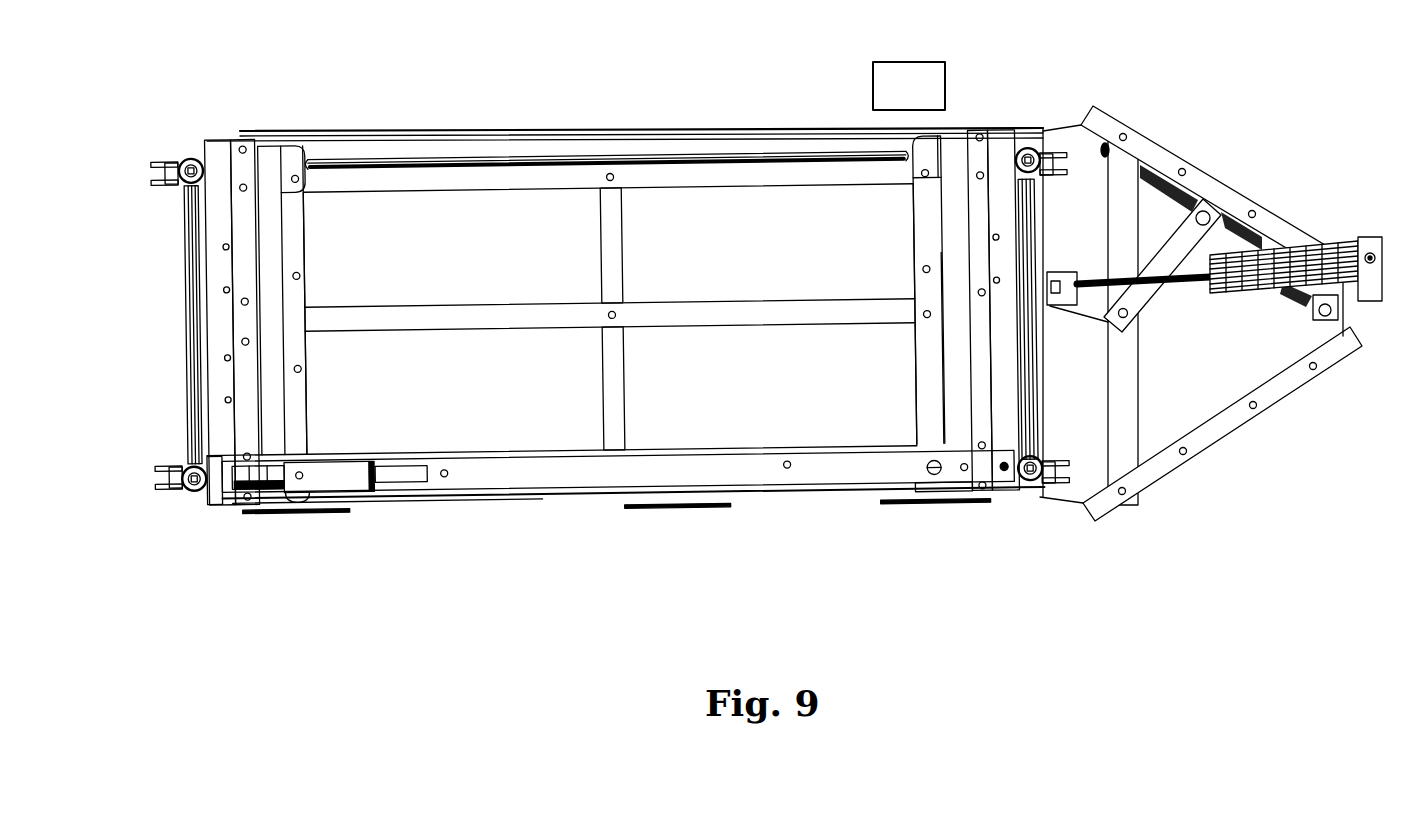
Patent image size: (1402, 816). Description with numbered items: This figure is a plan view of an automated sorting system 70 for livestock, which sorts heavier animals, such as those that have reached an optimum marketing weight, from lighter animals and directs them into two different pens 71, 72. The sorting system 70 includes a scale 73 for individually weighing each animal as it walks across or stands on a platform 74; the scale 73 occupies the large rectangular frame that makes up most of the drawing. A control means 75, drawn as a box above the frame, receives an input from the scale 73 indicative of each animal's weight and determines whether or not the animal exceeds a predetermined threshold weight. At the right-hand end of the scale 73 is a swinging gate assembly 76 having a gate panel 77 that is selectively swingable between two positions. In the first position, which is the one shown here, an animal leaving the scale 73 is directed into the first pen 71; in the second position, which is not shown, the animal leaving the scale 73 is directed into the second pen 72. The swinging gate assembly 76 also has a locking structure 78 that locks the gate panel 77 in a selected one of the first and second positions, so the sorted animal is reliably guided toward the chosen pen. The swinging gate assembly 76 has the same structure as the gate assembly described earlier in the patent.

The automated sorting system 70 is at (346, 559).
The first pen 71 is at (1222, 401).
The second pen 72 is at (1203, 229).
The scale 73 is at (554, 128).
The platform 74 is at (725, 232).
The control means 75 is at (925, 80).
The swinging gate assembly 76 is at (1186, 149).
The gate panel 77 is at (1250, 238).
The locking structure 78 is at (1187, 229).